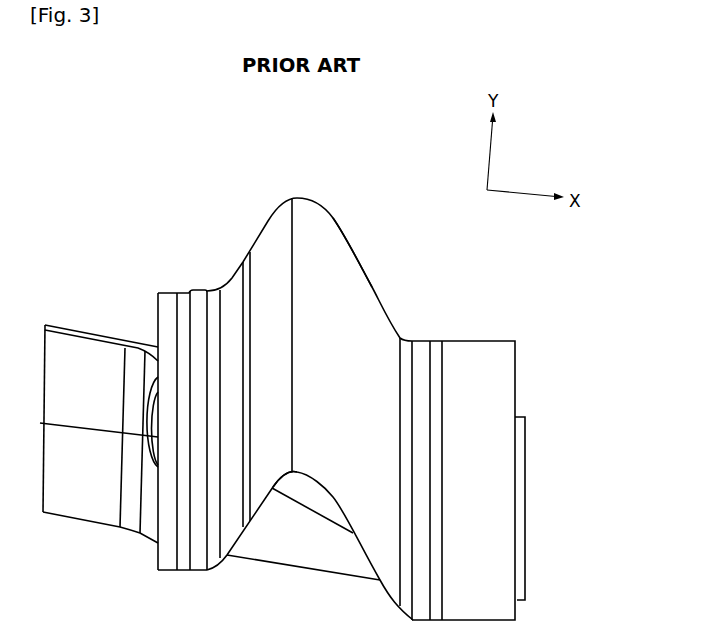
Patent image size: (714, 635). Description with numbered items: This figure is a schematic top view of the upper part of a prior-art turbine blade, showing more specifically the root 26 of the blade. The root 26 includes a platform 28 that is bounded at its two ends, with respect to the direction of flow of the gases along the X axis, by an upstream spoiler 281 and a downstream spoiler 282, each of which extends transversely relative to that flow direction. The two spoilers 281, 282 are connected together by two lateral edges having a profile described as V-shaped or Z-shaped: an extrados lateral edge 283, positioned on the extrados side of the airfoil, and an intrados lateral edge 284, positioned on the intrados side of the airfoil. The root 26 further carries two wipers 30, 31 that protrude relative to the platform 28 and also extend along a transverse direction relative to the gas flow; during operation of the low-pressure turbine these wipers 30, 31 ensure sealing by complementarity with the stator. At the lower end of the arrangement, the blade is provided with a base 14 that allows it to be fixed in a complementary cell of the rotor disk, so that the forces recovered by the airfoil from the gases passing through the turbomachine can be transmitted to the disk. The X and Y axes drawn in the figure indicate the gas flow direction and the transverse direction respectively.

The base 14 is at (66, 314).
The root 26 is at (378, 251).
The platform 28 is at (312, 245).
The upstream spoiler 281 is at (167, 315).
The downstream spoiler 282 is at (488, 383).
The extrados lateral edge 283 is at (278, 200).
The intrados lateral edge 284 is at (288, 495).
The wiper 30 is at (202, 300).
The wiper 31 is at (420, 350).